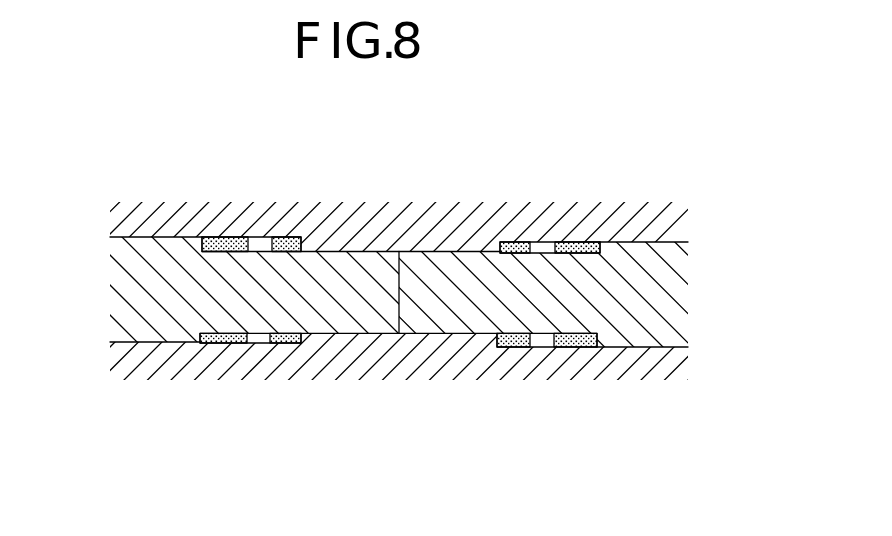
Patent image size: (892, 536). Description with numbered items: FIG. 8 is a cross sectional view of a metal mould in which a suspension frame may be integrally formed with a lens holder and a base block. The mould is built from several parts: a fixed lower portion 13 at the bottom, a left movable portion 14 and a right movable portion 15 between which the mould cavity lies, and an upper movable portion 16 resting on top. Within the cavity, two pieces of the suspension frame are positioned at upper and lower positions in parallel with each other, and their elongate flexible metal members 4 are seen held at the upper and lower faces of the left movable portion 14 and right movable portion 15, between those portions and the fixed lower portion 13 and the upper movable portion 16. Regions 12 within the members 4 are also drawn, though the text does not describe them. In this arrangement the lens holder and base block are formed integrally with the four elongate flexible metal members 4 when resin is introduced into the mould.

The elongate flexible metal member 4 is at (300, 238).
The conductive layer 12 is at (242, 238).
The fixed lower portion 13 is at (410, 360).
The left movable portion 14 is at (122, 290).
The right movable portion 15 is at (668, 275).
The upper movable portion 16 is at (405, 212).